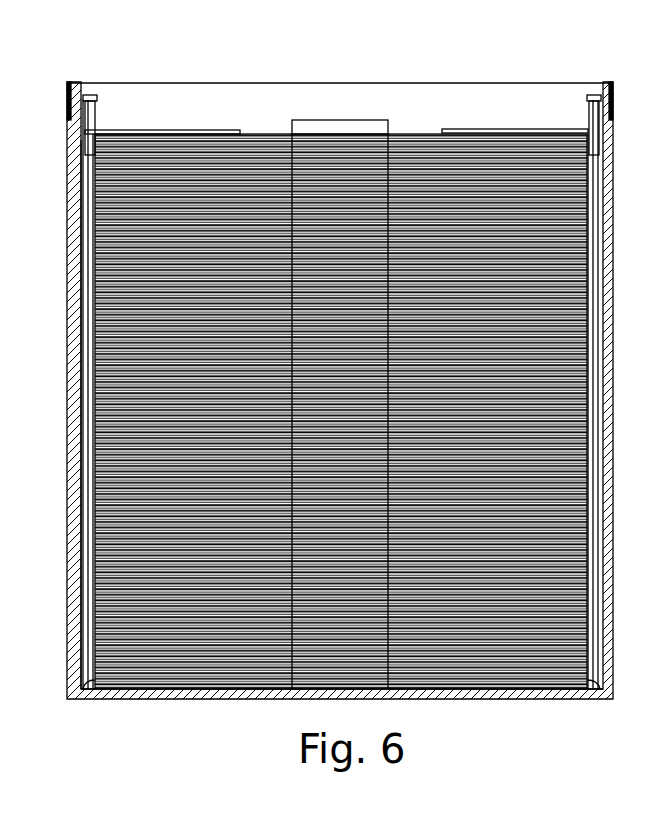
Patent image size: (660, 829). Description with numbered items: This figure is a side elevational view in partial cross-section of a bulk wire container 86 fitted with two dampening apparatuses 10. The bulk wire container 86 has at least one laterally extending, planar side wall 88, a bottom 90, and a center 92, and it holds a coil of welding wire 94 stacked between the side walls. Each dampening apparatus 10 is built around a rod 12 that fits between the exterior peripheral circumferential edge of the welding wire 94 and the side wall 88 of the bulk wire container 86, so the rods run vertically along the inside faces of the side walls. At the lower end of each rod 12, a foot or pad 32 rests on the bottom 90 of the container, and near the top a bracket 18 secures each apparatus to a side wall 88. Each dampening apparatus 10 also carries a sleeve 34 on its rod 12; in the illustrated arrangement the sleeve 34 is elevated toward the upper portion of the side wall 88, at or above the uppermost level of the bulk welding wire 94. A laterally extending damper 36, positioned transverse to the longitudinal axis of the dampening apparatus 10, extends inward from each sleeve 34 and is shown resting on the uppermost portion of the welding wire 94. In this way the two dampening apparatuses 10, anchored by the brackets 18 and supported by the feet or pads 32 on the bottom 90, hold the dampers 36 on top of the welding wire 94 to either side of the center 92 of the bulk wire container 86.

The dampening apparatus 10 is at (115, 114).
The rod 12 is at (85, 325).
The bracket 18 is at (74, 82).
The foot or pad 32 is at (82, 690).
The sleeve 34 is at (86, 158).
The damper 36 is at (188, 130).
The bulk wire container 86 is at (617, 655).
The side wall 88 is at (75, 493).
The bottom 90 is at (180, 702).
The center 92 is at (332, 120).
The welding wire 94 is at (416, 132).